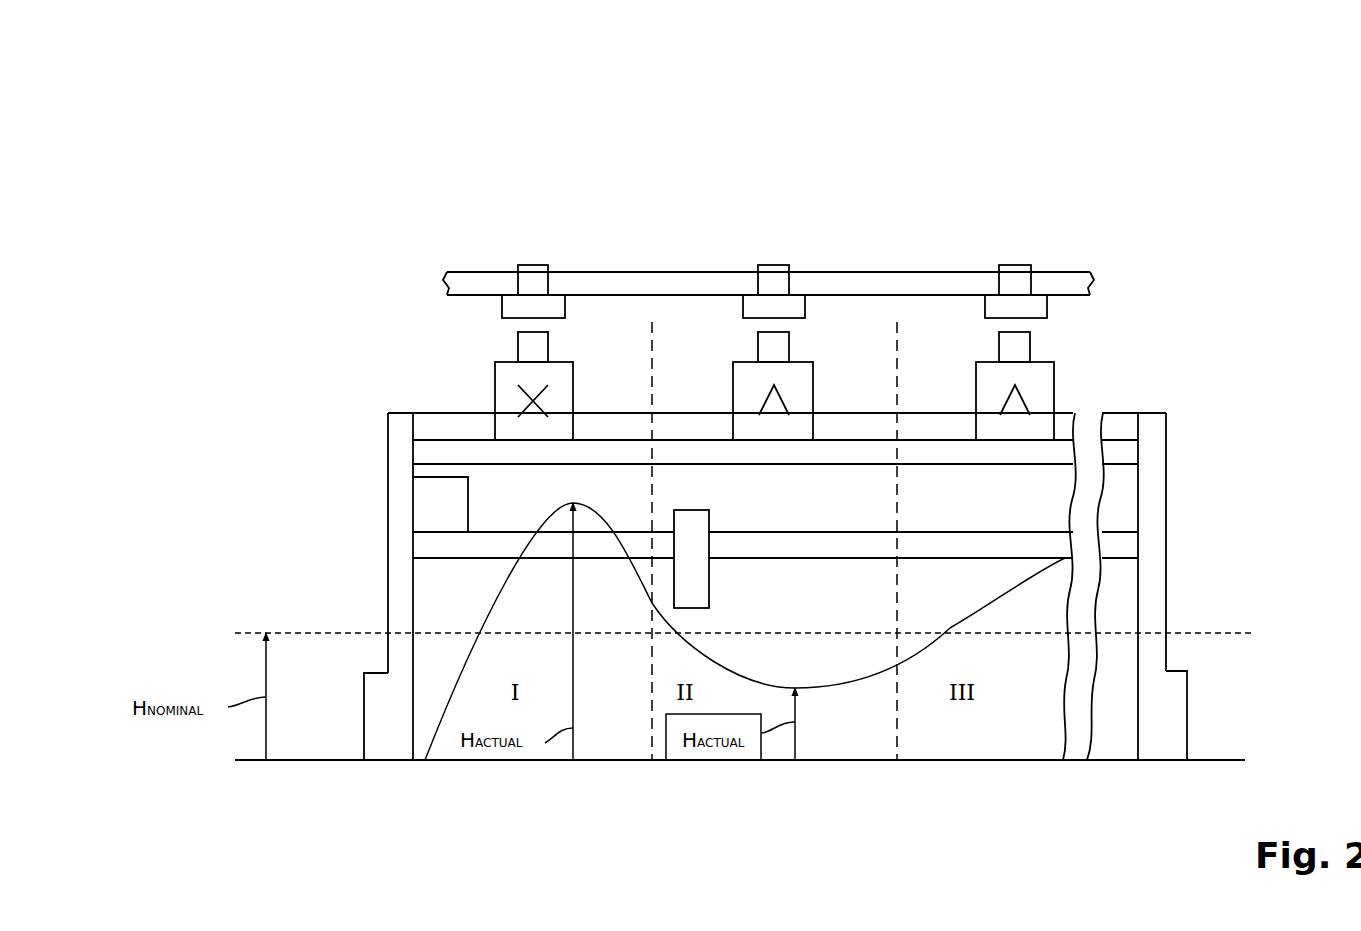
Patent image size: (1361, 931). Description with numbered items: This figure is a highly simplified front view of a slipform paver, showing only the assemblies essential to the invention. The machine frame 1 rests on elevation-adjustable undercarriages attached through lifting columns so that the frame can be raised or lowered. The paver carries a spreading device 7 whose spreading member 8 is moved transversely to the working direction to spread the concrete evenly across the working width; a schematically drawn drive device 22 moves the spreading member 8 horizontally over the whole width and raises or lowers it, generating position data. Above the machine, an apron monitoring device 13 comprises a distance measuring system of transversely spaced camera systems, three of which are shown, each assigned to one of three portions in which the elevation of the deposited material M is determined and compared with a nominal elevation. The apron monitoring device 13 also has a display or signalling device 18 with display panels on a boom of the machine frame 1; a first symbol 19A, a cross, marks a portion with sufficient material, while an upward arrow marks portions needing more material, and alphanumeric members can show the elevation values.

The machine frame 1 is at (1187, 477).
The spreading device 7 is at (612, 490).
The spreading member 8 is at (709, 585).
The apron monitoring device 13 is at (871, 228).
The display or signalling device 18 is at (405, 368).
The first symbol 19A is at (516, 398).
The drive device 22 is at (425, 507).
The material M is at (483, 610).